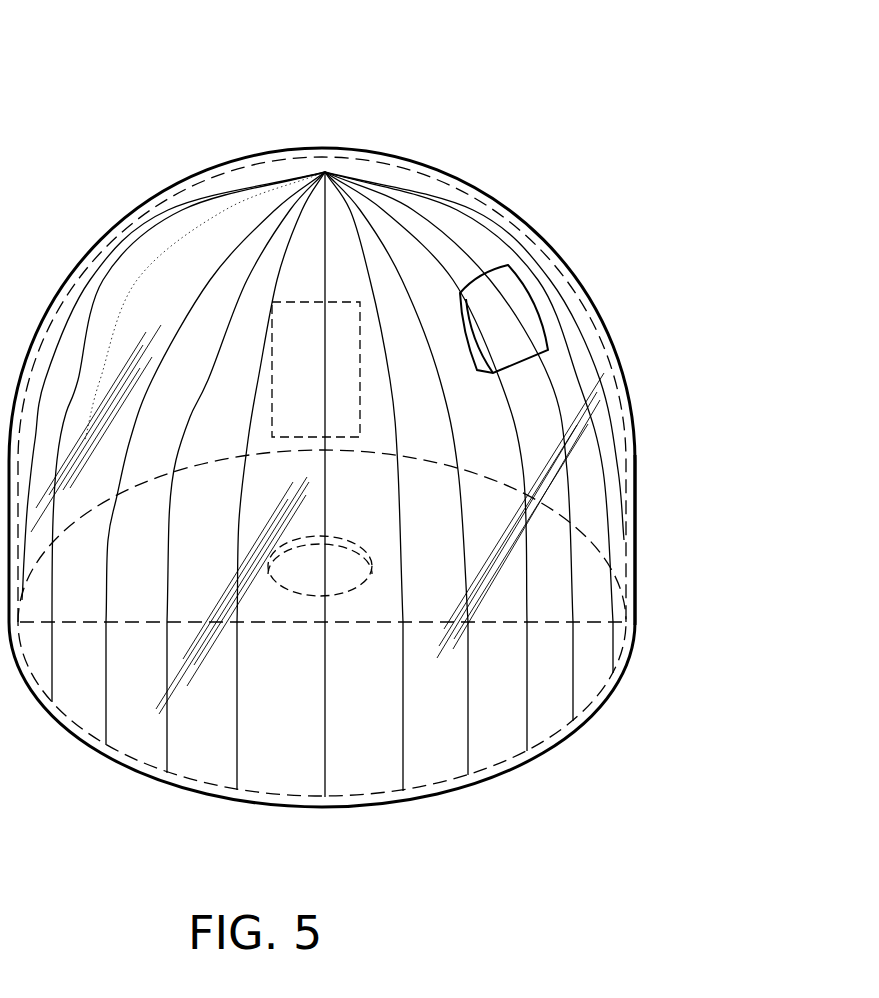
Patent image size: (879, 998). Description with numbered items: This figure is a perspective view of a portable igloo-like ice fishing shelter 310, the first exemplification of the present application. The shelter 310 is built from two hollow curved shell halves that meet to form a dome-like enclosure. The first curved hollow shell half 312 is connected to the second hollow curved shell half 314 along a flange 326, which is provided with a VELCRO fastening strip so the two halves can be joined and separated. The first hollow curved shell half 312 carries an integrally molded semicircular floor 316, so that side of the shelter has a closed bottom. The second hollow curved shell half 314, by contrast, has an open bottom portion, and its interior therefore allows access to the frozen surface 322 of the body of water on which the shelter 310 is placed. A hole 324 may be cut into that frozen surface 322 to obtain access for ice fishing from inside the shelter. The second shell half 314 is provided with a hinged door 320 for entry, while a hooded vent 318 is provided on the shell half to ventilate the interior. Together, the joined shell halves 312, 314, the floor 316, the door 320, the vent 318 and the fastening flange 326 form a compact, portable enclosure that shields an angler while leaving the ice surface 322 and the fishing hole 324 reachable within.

The ice fishing shelter 310 is at (113, 78).
The first curved hollow shell half 312 is at (540, 723).
The second hollow curved shell half 314 is at (481, 190).
The semicircular floor 316 is at (302, 712).
The hooded vent 318 is at (532, 332).
The hinged door 320 is at (296, 380).
The frozen surface 322 is at (245, 547).
The hole 324 is at (350, 557).
The flange 326 is at (637, 500).